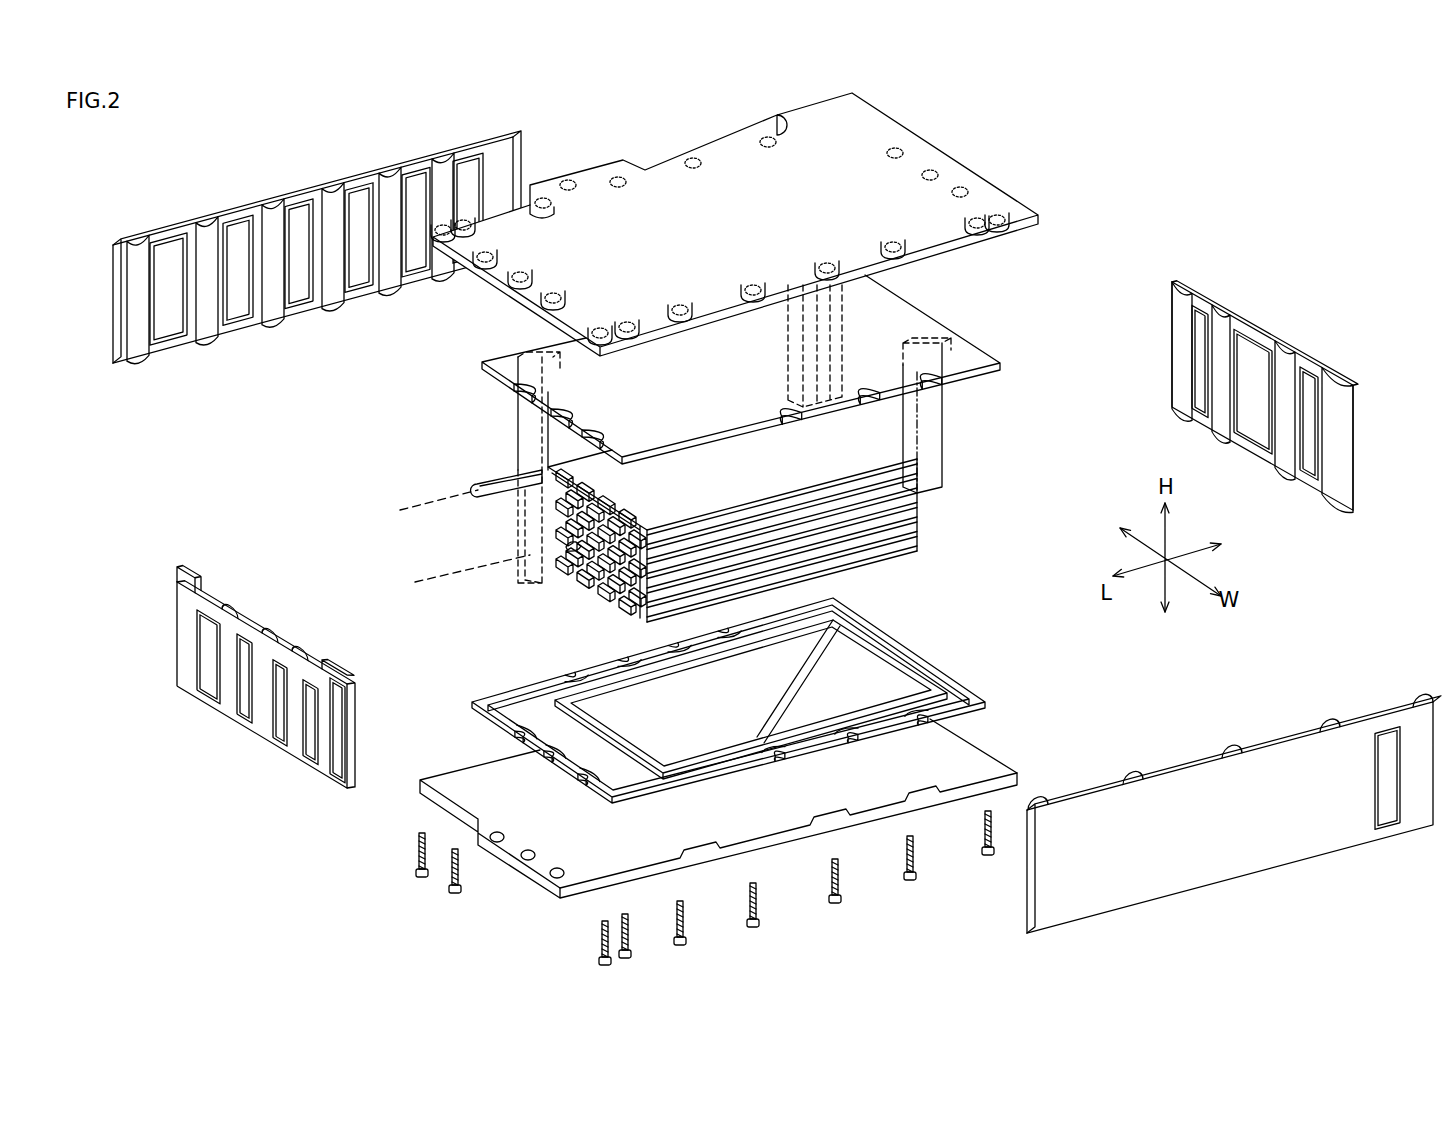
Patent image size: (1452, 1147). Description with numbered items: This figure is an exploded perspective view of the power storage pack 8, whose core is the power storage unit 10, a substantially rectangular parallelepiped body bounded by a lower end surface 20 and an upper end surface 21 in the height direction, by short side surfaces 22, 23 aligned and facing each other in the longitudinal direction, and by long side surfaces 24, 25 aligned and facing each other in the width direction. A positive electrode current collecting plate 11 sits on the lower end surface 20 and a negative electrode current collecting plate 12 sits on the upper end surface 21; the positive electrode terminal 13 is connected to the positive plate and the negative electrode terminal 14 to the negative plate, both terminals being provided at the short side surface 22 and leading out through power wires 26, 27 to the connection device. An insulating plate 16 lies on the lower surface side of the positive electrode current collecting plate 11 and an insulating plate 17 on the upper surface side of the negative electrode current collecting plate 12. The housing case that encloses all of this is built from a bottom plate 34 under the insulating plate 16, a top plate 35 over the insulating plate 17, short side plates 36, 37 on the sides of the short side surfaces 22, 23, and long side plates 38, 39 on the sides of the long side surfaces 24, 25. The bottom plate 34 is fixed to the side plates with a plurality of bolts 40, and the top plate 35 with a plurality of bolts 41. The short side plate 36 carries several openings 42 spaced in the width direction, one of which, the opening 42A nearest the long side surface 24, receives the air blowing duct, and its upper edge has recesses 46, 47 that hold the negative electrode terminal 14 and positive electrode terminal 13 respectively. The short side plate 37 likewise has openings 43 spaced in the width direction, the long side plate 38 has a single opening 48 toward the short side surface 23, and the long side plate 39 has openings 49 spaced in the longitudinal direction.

The power storage pack 8 is at (1210, 166).
The power storage unit 10 is at (738, 545).
The positive electrode current collecting plate 11 is at (873, 557).
The negative electrode current collecting plate 12 is at (877, 428).
The positive electrode terminal 13 is at (497, 486).
The negative electrode terminal 14 is at (568, 550).
The insulating plate 16 is at (988, 703).
The insulating plate 17 is at (1003, 365).
The lower end surface 20 is at (848, 570).
The upper end surface 21 is at (872, 463).
The short side surface 22 is at (575, 515).
The short side surface 23 is at (873, 490).
The long side surface 24 is at (883, 518).
The long side surface 25 is at (580, 450).
The power wire 26 is at (418, 503).
The power wire 27 is at (425, 578).
The bottom plate 34 is at (980, 750).
The top plate 35 is at (794, 224).
The short side plate 36 is at (247, 654).
The short side plate 37 is at (1272, 398).
The long side plate 38 is at (1234, 793).
The long side plate 39 is at (317, 243).
The bolts 40 is at (455, 900).
The bolts 41 is at (925, 172).
The openings 42 is at (240, 712).
The opening 42A is at (333, 767).
The openings 43 is at (1255, 365).
The recess 46 is at (317, 655).
The recess 47 is at (204, 590).
The opening 48 is at (1387, 738).
The openings 49 is at (234, 250).